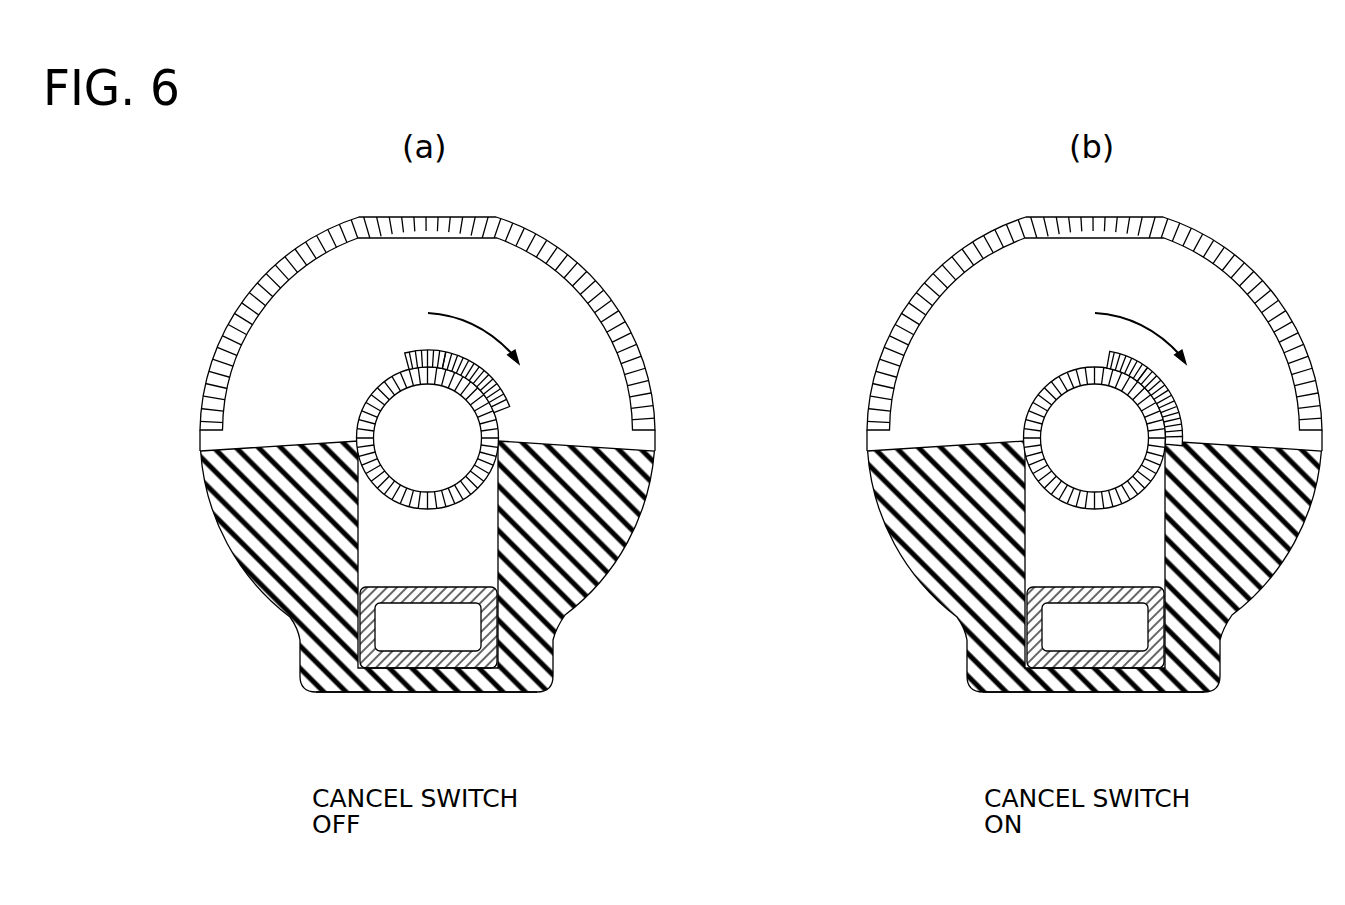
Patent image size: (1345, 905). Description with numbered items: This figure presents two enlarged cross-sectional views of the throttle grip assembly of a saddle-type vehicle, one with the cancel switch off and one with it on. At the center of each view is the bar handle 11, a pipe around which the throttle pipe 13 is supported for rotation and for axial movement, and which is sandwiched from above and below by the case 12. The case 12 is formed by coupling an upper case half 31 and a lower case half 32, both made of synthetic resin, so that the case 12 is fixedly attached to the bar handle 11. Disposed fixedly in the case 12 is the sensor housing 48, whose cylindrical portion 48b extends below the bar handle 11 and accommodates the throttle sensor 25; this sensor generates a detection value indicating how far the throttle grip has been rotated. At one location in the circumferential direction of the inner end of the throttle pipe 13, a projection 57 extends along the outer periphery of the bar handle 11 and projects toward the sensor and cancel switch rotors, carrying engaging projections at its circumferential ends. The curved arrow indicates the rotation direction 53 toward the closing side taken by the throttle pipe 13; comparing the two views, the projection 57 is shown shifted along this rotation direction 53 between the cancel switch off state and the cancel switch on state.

The bar handle 11 is at (393, 484).
The case 12 is at (726, 448).
The throttle pipe 13 is at (527, 426).
The throttle sensor 25 is at (435, 643).
The upper case half 31 is at (204, 412).
The lower case half 32 is at (238, 552).
The sensor housing 48 is at (428, 575).
The cylindrical portion 48b is at (533, 688).
The rotation direction 53 is at (476, 325).
The projection 57 is at (442, 354).